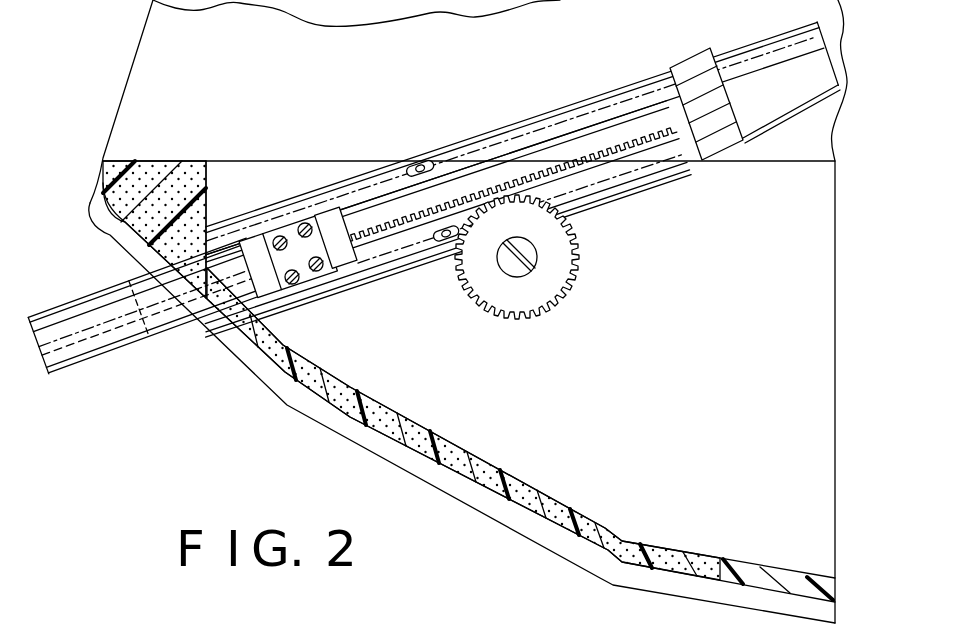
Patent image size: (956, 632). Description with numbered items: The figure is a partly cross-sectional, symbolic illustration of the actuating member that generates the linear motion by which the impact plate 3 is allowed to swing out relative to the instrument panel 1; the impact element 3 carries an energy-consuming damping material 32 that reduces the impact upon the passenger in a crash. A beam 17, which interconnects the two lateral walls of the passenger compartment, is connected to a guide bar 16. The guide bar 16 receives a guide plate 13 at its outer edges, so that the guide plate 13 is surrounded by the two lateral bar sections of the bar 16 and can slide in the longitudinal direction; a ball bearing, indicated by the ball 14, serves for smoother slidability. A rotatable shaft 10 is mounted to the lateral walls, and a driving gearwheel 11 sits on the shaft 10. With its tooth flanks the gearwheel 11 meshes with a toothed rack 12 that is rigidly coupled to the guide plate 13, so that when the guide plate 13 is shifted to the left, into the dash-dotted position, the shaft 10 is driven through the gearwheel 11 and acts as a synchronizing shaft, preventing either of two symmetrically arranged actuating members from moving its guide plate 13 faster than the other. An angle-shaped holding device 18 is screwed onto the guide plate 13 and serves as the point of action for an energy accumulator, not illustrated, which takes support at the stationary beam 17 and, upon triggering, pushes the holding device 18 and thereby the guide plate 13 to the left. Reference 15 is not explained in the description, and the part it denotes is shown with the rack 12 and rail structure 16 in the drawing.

The instrument panel 1 is at (142, 77).
The impact element 3 is at (477, 473).
The rotatable shaft 10 is at (532, 250).
The driving gearwheel 11 is at (553, 293).
The toothed rack 12 is at (600, 150).
The guide plate 13 is at (785, 85).
The ball 14 is at (420, 162).
The rack 15 is at (374, 252).
The guide bar 16 is at (487, 160).
The beam 17 is at (717, 130).
The holding device 18 is at (326, 218).
The damping material 32 is at (370, 440).